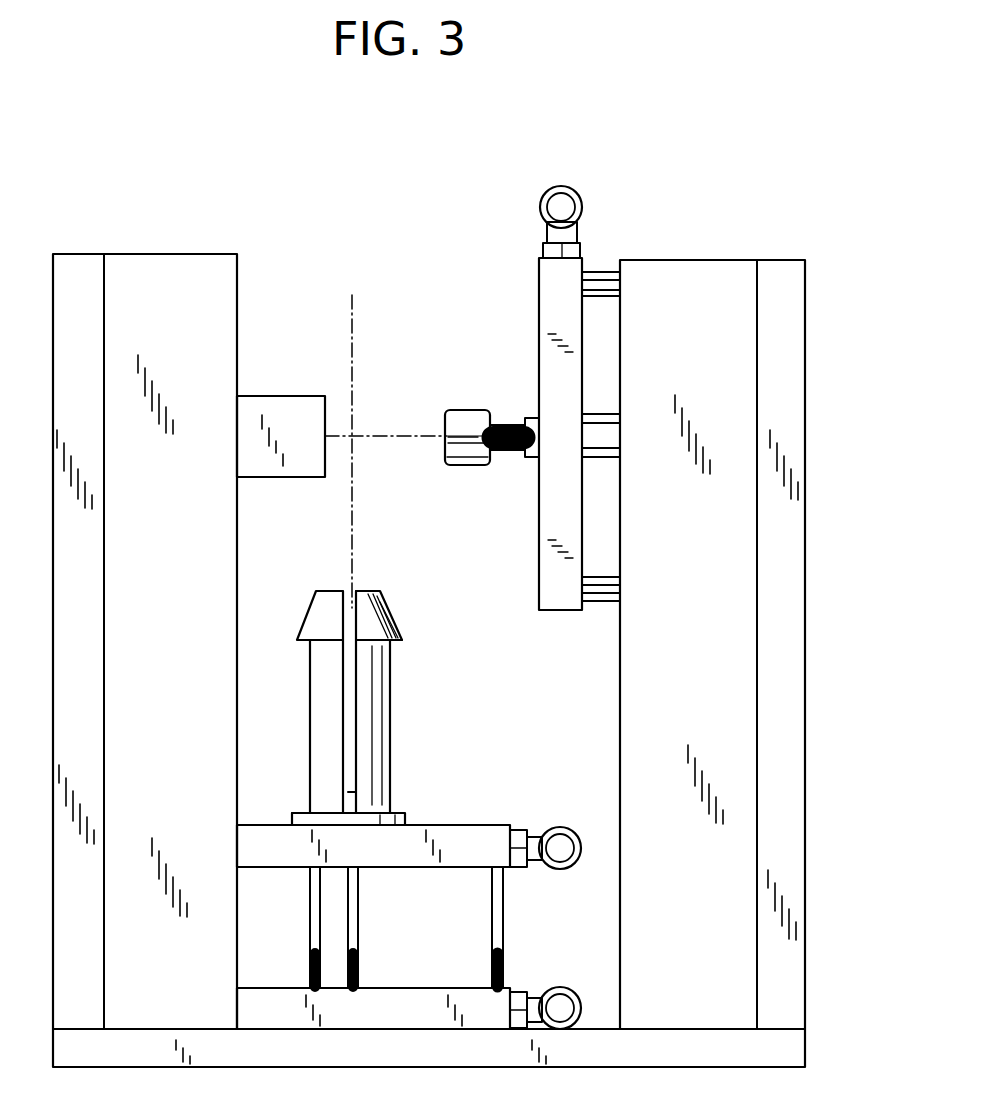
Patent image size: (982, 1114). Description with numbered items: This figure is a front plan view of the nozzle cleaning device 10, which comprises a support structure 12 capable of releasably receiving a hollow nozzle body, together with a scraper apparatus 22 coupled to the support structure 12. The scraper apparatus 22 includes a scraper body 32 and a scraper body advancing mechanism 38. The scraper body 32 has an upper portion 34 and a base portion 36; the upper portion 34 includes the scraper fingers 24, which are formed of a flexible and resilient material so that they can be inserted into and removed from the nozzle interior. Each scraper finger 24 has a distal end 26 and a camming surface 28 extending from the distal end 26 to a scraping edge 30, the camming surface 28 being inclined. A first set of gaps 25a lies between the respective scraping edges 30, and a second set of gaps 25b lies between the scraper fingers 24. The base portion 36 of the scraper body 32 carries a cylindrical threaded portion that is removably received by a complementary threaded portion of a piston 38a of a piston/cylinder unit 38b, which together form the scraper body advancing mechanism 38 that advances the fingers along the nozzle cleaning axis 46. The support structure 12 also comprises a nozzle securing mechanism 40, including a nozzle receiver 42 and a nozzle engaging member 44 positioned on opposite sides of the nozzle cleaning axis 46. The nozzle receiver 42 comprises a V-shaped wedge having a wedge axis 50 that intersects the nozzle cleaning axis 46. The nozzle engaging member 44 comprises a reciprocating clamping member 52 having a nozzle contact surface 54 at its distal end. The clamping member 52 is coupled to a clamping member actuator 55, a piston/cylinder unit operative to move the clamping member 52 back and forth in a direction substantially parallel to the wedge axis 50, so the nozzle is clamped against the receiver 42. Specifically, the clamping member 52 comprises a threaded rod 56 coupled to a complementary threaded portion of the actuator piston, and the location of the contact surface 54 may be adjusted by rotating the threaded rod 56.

The nozzle cleaning device 10 is at (111, 210).
The support structure 12 is at (806, 323).
The scraper apparatus 22 is at (417, 603).
The scraper fingers 24 is at (309, 683).
The first set of gaps 25a is at (352, 661).
The second set of gaps 25b is at (351, 793).
The distal end 26 is at (386, 591).
The camming surface 28 is at (397, 620).
The scraping edge 30 is at (401, 641).
The scraper body 32 is at (422, 714).
The upper portion 34 is at (276, 697).
The base portion 36 is at (307, 803).
The scraper body advancing mechanism 38 is at (426, 933).
The piston 38a is at (407, 821).
The piston/cylinder unit 38b is at (461, 917).
The nozzle securing mechanism 40 is at (494, 289).
The nozzle receiver 42 is at (278, 412).
The nozzle engaging member 44 is at (514, 598).
The nozzle cleaning axis 46 is at (351, 342).
The wedge axis 50 is at (434, 414).
The reciprocating clamping member 52 is at (492, 461).
The nozzle contact surface 54 is at (444, 452).
The clamping member actuator 55 is at (598, 272).
The threaded rod 56 is at (524, 418).